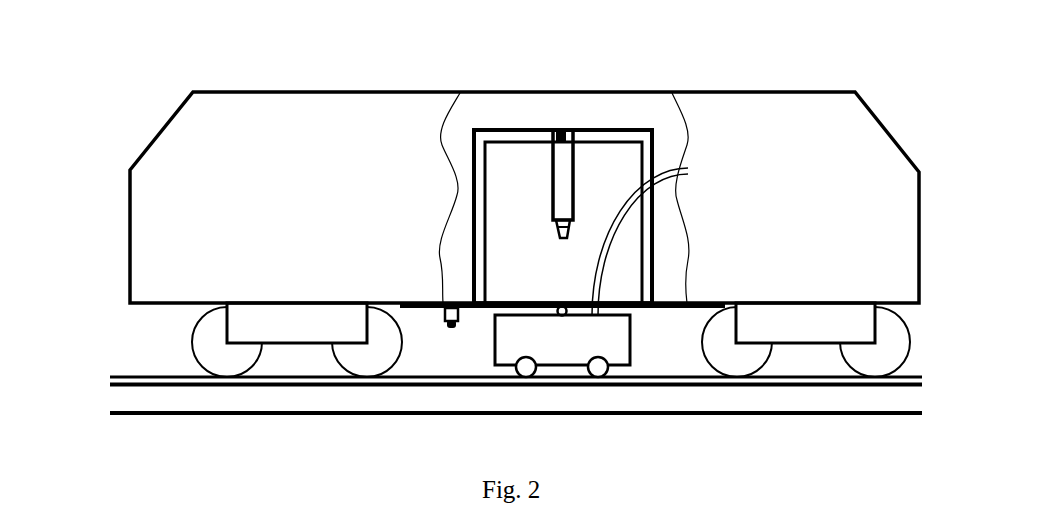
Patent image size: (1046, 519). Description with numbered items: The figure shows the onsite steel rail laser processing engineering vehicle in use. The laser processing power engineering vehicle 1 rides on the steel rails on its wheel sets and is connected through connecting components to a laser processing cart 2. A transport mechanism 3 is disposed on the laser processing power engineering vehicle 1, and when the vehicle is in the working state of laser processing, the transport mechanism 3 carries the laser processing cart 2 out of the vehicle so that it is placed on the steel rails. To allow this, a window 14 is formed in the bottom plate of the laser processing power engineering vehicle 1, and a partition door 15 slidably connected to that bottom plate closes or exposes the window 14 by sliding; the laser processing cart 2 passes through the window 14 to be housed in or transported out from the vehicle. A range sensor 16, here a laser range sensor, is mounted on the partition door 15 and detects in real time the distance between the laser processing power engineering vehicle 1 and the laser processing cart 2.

The laser processing power engineering vehicle 1 is at (338, 135).
The laser processing cart 2 is at (568, 343).
The transport mechanism 3 is at (560, 130).
The window 14 is at (530, 303).
The partition door 15 is at (408, 306).
The range sensor 16 is at (452, 308).